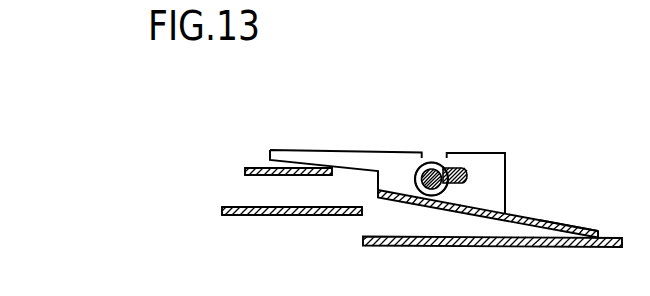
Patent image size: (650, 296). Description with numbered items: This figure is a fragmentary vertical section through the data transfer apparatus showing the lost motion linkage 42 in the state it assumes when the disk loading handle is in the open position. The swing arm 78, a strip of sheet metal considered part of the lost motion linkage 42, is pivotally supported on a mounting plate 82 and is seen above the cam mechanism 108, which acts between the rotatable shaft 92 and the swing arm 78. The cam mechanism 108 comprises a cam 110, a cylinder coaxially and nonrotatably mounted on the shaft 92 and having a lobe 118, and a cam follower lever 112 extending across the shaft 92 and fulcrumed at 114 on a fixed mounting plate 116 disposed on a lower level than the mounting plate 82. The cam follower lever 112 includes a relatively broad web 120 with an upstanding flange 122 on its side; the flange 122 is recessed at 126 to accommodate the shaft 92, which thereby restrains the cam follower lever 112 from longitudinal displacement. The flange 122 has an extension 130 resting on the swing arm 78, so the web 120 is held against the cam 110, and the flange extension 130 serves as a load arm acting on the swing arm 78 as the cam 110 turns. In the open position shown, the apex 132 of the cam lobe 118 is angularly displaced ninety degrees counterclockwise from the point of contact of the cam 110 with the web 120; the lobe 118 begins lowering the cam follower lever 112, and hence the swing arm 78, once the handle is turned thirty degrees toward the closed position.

The lost motion linkage 42 is at (281, 142).
The swing arm 78 is at (287, 178).
The mounting plate 82 is at (307, 215).
The rotatable shaft 92 is at (444, 186).
The cam mechanism 108 is at (438, 152).
The cam 110 is at (410, 170).
The cam follower lever 112 is at (560, 221).
The fulcrum 114 is at (582, 242).
The fixed mounting plate 116 is at (493, 245).
The lobe 118 is at (461, 167).
The web 120 is at (460, 209).
The flange 122 is at (505, 161).
The recess 126 is at (436, 152).
The flange extension 130 is at (322, 155).
The apex 132 is at (493, 172).